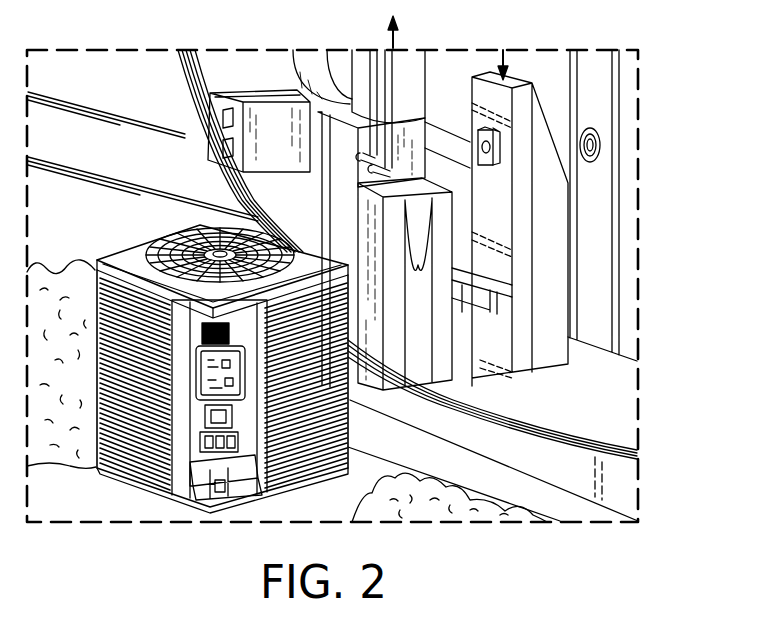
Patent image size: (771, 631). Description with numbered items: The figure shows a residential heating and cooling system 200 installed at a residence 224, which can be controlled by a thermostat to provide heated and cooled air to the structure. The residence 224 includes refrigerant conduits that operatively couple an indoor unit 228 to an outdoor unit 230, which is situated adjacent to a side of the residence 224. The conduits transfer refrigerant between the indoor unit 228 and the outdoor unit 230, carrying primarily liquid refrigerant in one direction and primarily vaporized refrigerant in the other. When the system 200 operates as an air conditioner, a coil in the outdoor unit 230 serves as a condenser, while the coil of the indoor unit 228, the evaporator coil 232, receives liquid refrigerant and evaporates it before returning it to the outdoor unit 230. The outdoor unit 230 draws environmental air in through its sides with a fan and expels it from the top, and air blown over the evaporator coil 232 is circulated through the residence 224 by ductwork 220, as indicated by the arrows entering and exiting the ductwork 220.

The residential heating and cooling system 200 is at (645, 58).
The ductwork 220 is at (558, 245).
The residence 224 is at (108, 70).
The indoor unit 228 is at (437, 348).
The outdoor unit 230 is at (122, 467).
The evaporator coil 232 is at (407, 131).